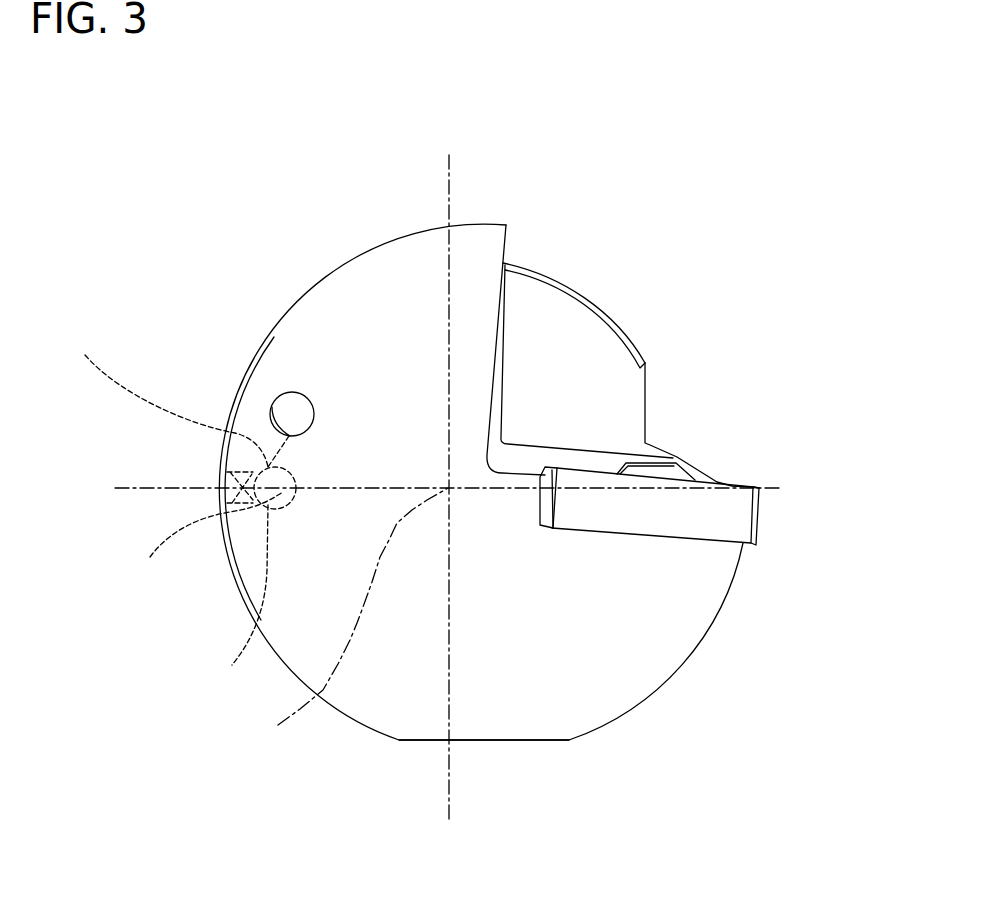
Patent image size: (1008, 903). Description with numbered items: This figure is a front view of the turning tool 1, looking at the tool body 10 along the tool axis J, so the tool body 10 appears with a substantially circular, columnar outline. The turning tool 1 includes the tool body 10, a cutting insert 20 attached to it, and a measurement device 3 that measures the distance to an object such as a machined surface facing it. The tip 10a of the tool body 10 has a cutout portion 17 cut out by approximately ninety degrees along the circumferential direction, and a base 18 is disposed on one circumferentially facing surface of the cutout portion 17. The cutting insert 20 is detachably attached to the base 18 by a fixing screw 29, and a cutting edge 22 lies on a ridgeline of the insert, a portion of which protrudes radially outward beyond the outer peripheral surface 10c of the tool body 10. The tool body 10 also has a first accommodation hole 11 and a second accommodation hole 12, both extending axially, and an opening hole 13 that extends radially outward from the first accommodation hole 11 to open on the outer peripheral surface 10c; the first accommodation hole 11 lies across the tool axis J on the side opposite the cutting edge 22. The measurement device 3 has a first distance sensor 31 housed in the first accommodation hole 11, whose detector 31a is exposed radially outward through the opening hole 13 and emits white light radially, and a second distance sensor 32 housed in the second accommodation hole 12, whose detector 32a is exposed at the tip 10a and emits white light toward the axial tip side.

The turning tool 1 is at (165, 185).
The measurement device 3 is at (50, 290).
The tool body 10 is at (360, 243).
The tip 10a is at (525, 679).
The outer peripheral surface 10c is at (293, 305).
The first accommodation hole 11 is at (240, 602).
The second accommodation hole 12 is at (270, 412).
The opening hole 13 is at (225, 486).
The cutout portion 17 is at (490, 405).
The base 18 is at (590, 527).
The cutting insert 20 is at (775, 520).
The cutting edge 22 is at (760, 487).
The fixing screw 29 is at (673, 468).
The first distance sensor 31 is at (161, 399).
The detector 31a is at (200, 530).
The second distance sensor 32 is at (292, 392).
The detector 32a is at (293, 414).
The tool axis J is at (353, 617).